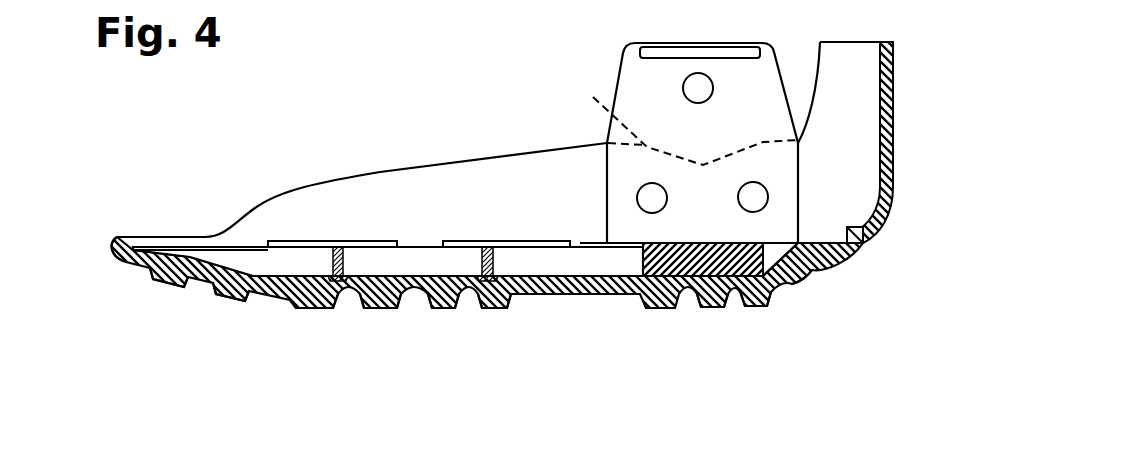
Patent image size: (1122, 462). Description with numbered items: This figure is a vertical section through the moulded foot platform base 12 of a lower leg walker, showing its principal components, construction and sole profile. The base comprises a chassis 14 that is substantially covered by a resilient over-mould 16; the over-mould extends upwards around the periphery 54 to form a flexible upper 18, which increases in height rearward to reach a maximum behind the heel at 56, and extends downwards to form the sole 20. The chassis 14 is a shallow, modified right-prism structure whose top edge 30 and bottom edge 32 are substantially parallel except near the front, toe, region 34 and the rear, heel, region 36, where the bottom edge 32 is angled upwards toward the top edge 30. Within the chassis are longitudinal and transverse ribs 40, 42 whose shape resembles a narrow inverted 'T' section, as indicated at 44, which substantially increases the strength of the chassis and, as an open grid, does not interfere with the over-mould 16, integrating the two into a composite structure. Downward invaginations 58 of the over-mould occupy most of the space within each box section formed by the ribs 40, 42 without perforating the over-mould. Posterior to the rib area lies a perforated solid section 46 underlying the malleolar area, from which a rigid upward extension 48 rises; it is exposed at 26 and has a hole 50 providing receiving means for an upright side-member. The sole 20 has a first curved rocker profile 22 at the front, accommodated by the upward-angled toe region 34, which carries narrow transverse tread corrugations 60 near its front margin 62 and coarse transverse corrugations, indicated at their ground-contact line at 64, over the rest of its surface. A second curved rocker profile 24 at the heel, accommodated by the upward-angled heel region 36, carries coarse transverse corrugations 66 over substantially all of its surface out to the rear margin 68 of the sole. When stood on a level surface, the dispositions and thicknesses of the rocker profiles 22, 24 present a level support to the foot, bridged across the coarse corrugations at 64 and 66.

The foot platform base 12 is at (303, 178).
The chassis 14 is at (580, 280).
The over-mould 16 is at (497, 308).
The flexible upper 18 is at (383, 177).
The sole 20 is at (330, 313).
The first rocker profile 22 is at (320, 308).
The second rocker profile 24 is at (753, 305).
The exposed upward extension 26 is at (680, 118).
The top edge 30 is at (243, 248).
The bottom edge 32 is at (430, 305).
The front toe region 34 is at (221, 285).
The rear heel region 36 is at (803, 278).
The longitudinal ribs 40 is at (292, 262).
The transverse ribs 42 is at (340, 247).
The inverted 'T' section 44 is at (470, 268).
The perforated solid section 46 is at (657, 244).
The rigid upward extension 48 is at (635, 87).
The hole 50 is at (688, 88).
The periphery 54 is at (172, 234).
The maximum height point 56 is at (893, 53).
The downward invagination 58 is at (528, 257).
The narrow transverse tread corrugations 60 is at (167, 272).
The front margin 62 is at (122, 260).
The coarse transverse corrugations 64 is at (383, 310).
The coarse transverse corrugations 66 is at (710, 308).
The rear margin 68 is at (863, 243).